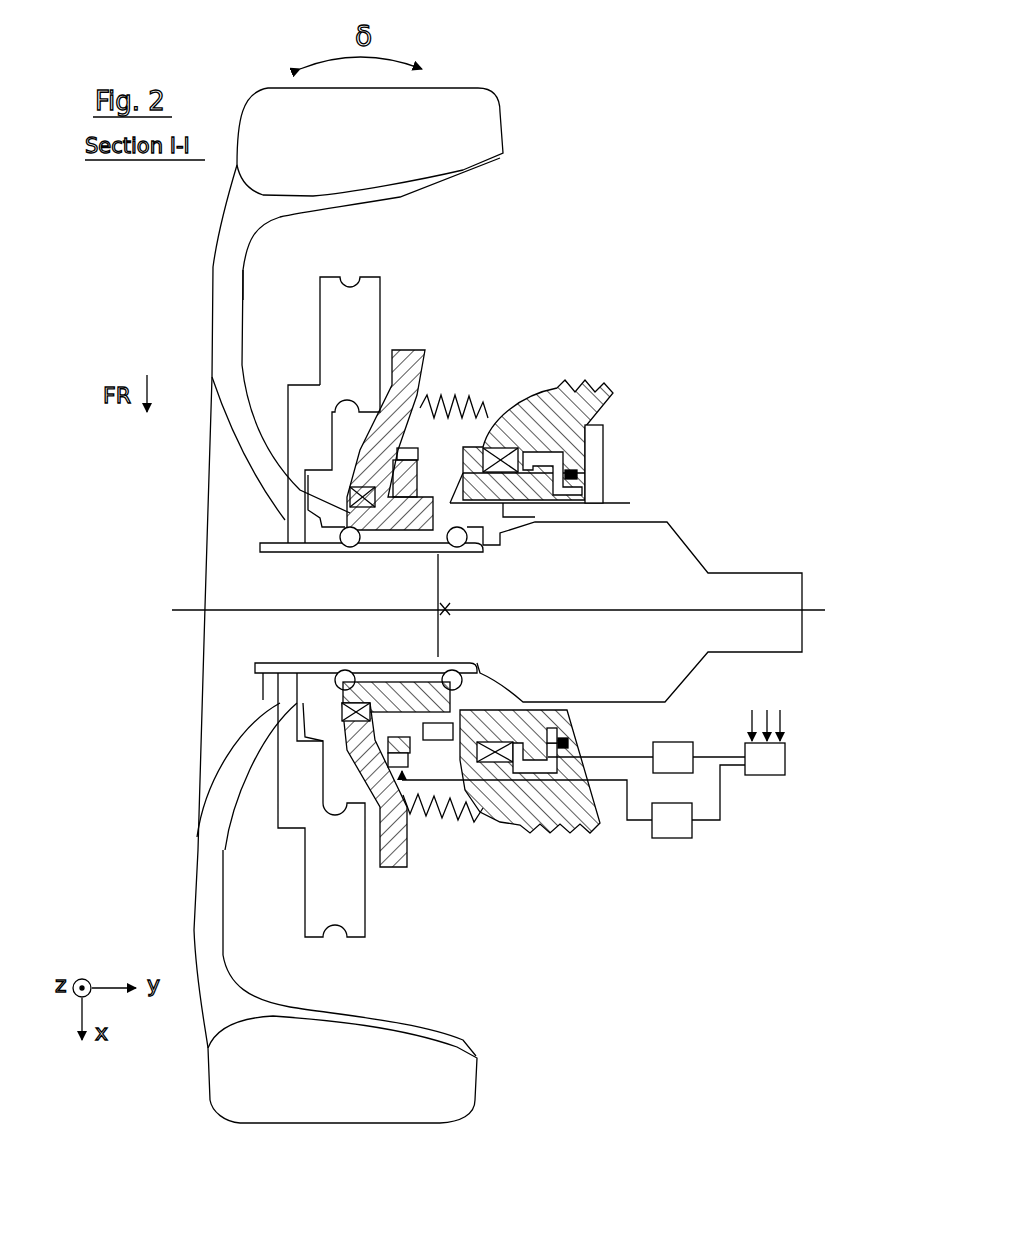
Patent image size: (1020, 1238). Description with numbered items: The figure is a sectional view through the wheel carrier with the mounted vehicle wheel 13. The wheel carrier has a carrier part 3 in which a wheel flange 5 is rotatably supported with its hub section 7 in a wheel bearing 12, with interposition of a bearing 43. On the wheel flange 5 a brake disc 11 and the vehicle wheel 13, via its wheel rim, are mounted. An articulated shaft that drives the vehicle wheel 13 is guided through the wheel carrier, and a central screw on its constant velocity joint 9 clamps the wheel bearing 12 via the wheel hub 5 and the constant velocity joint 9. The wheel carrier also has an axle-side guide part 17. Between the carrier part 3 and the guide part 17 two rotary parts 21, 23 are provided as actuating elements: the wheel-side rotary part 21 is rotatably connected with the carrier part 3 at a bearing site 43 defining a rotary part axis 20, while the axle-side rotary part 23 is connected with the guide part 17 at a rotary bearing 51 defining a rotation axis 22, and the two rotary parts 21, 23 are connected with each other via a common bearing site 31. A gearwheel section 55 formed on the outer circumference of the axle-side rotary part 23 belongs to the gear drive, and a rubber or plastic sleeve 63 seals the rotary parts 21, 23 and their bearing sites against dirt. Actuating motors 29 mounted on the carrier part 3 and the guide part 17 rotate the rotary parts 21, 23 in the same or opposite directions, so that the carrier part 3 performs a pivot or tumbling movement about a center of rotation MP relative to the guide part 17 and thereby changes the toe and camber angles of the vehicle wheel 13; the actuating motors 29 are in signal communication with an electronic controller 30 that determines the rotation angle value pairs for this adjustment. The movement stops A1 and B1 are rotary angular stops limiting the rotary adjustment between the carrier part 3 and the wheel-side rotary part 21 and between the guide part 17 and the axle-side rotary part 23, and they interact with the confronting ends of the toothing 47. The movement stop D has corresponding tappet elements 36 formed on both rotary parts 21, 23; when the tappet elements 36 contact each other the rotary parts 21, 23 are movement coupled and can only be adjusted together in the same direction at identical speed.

The carrier part 3 is at (413, 350).
The wheel flange 5 is at (313, 528).
The hub section 7 is at (368, 555).
The constant velocity joint 9 is at (665, 522).
The brake disc 11 is at (368, 340).
The wheel bearing 12 is at (337, 680).
The vehicle wheel 13 is at (212, 270).
The guide part 17 is at (613, 396).
The rotary part axis 20 is at (177, 608).
The rotary part 21 is at (414, 482).
The rotation axis 22 is at (708, 613).
The rotary part 23 is at (483, 473).
The actuating motor 29 is at (687, 769).
The electronic controller 30 is at (779, 771).
The common bearing site 31 is at (523, 700).
The tappet elements 36 is at (463, 740).
The bearing site 43 is at (330, 507).
The toothing 47 is at (372, 768).
The rotary bearing 51 is at (510, 427).
The gearwheel section 55 is at (533, 757).
The sleeve 63 is at (467, 403).
The movement stop A1 is at (377, 450).
The movement stop B1 is at (603, 452).
The center of rotation MP is at (450, 606).
The movement stop D is at (437, 870).